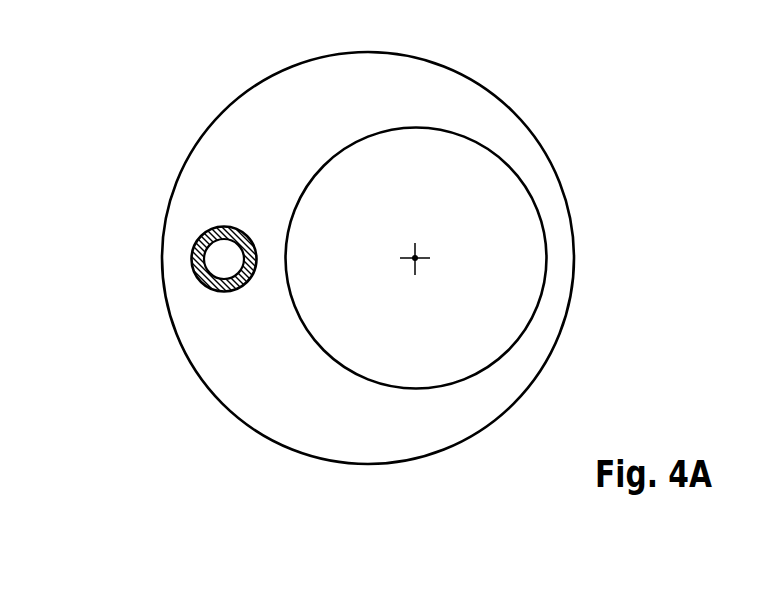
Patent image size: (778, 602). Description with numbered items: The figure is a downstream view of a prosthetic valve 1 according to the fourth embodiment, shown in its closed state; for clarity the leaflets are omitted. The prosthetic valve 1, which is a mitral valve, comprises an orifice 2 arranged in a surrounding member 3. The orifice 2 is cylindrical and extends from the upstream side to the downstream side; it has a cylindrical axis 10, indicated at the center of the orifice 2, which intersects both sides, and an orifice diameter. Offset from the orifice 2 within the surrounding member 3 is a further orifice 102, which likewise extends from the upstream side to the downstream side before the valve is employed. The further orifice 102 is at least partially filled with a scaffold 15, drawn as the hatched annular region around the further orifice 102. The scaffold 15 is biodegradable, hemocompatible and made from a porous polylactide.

The prosthetic valve 1 is at (348, 240).
The orifice 2 is at (498, 200).
The surrounding member 3 is at (212, 325).
The cylindrical axis 10 is at (420, 262).
The scaffold 15 is at (197, 268).
The further orifice 102 is at (220, 252).